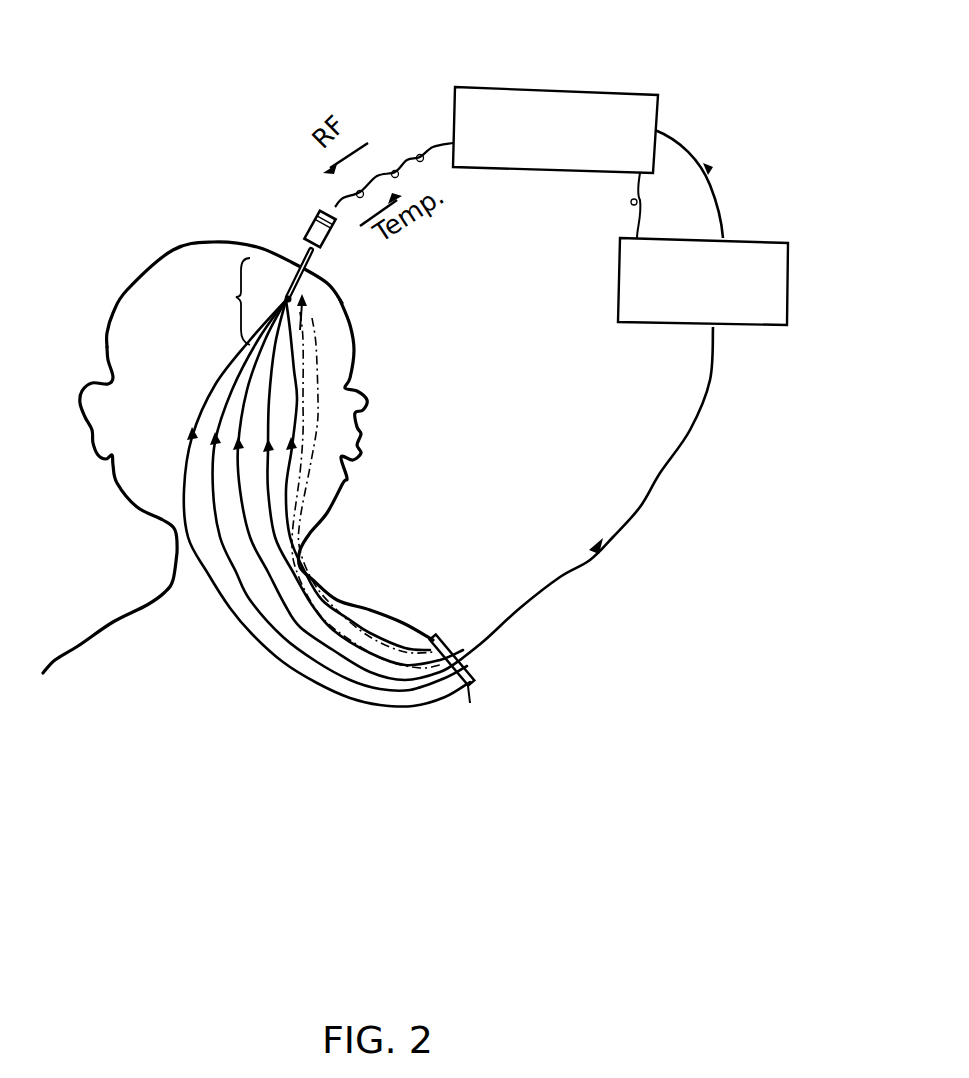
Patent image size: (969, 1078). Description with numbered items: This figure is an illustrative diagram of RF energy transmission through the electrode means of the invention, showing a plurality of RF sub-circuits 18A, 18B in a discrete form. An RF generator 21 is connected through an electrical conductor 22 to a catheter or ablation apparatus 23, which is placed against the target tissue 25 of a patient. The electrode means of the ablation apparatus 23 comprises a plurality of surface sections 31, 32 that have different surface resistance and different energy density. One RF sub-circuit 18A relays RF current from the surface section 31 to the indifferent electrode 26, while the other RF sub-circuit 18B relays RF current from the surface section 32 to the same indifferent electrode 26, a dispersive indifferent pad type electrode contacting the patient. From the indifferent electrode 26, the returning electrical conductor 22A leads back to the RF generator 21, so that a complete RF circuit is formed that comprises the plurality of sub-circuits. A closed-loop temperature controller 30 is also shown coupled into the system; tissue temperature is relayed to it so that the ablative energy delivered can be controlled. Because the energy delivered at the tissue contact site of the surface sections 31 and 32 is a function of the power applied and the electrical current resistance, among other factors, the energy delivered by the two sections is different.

The RF sub-circuit 18A is at (305, 379).
The RF sub-circuit 18B is at (317, 422).
The RF generator 21 is at (787, 248).
The electrical conductor 22 is at (406, 151).
The second electrical conductor 22A is at (642, 503).
The ablation apparatus 23 is at (300, 291).
The target tissue 25 is at (220, 301).
The indifferent electrode 26 is at (480, 673).
The closed-loop temperature controller 30 is at (647, 95).
The surface section 31 is at (289, 278).
The surface section 32 is at (285, 292).